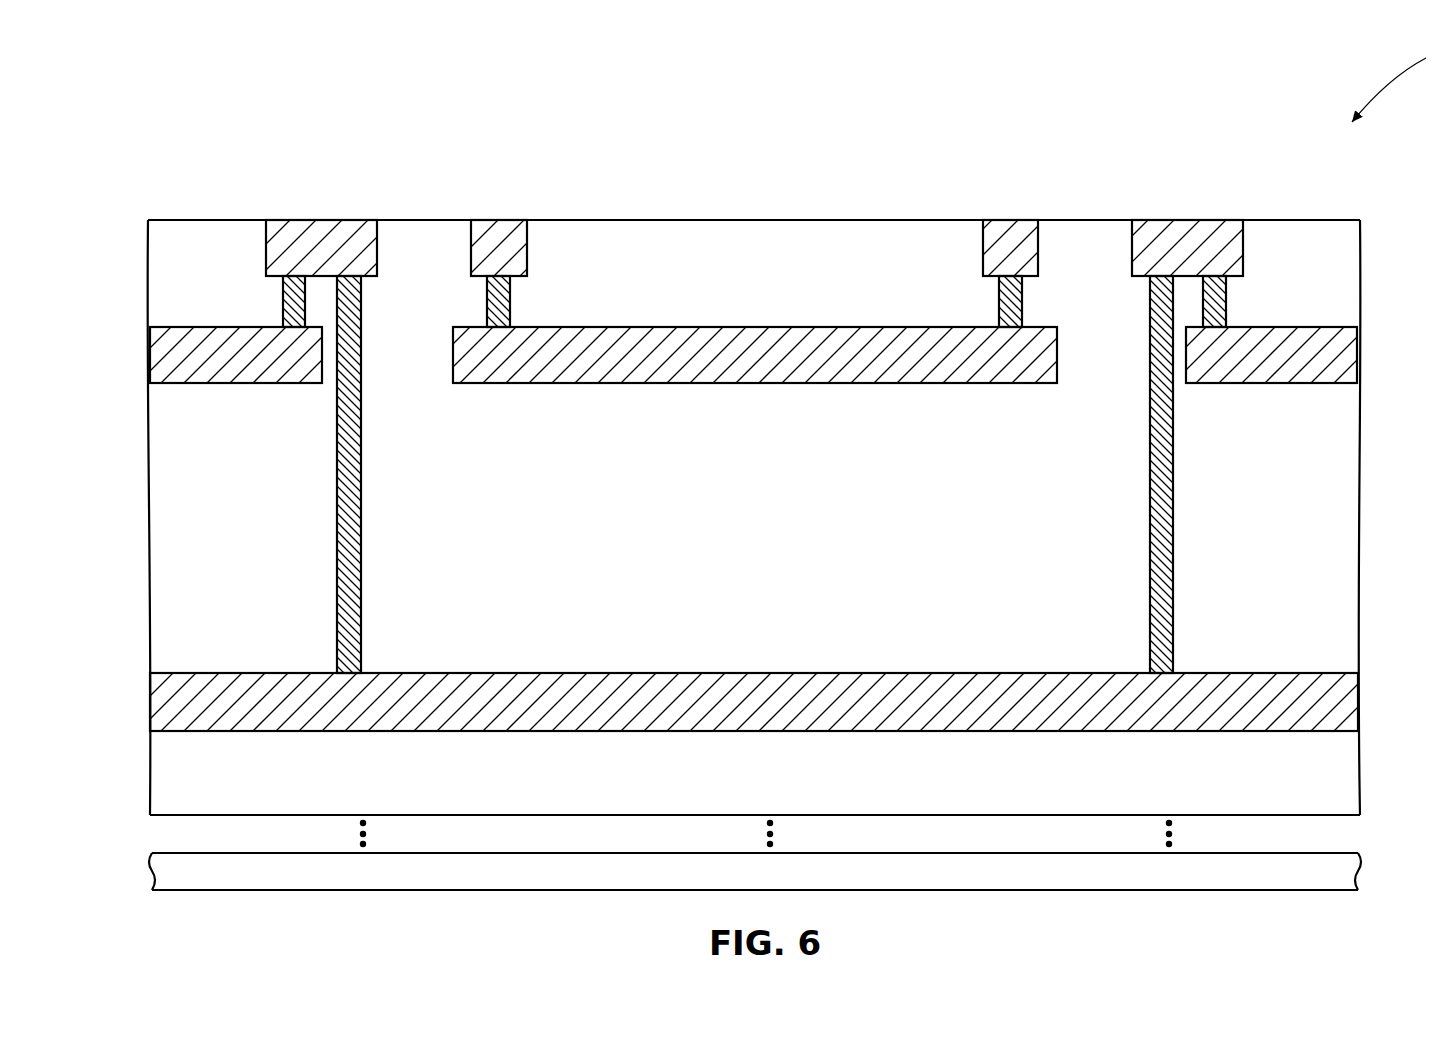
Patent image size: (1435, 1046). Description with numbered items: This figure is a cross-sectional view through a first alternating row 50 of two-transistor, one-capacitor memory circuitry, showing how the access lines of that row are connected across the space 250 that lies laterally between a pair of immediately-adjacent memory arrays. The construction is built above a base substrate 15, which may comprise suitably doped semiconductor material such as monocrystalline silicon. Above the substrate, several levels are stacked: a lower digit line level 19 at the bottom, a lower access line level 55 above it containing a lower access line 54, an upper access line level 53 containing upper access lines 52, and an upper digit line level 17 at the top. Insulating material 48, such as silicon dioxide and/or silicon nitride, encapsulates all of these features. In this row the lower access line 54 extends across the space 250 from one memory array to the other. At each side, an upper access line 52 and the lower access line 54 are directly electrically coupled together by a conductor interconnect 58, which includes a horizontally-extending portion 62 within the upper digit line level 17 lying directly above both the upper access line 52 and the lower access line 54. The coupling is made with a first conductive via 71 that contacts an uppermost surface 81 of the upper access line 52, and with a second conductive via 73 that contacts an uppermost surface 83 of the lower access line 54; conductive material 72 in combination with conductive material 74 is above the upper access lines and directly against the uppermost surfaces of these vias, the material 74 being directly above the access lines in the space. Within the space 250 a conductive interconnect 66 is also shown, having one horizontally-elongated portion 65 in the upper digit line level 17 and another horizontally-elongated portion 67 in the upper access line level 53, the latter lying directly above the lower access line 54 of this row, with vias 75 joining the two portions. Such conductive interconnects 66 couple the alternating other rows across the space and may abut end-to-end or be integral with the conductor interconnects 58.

The base substrate 15 is at (1295, 882).
The upper digit line level 17 is at (145, 253).
The lower digit line level 19 is at (145, 785).
The insulating material 48 is at (195, 268).
The first alternating row 50 is at (772, 146).
The upper access line 52 is at (221, 387).
The upper access line level 53 is at (145, 357).
The lower access line 54 is at (744, 670).
The lower access line level 55 is at (145, 702).
The conductor interconnect 58 is at (280, 310).
The horizontally-extending portion 62 is at (377, 212).
The horizontally-elongated portion 65 is at (497, 240).
The conductive interconnect 66 is at (513, 302).
The another horizontally-elongated portion 67 is at (800, 372).
The first conductive via 71 is at (285, 292).
The conductive material 72 is at (300, 319).
The second conductive via 73 is at (363, 357).
The conductive material 74 is at (362, 576).
The via 75 is at (486, 301).
The uppermost surface of upper access line 81 is at (183, 327).
The uppermost surface of lower access line 83 is at (560, 673).
The space 250 is at (888, 192).